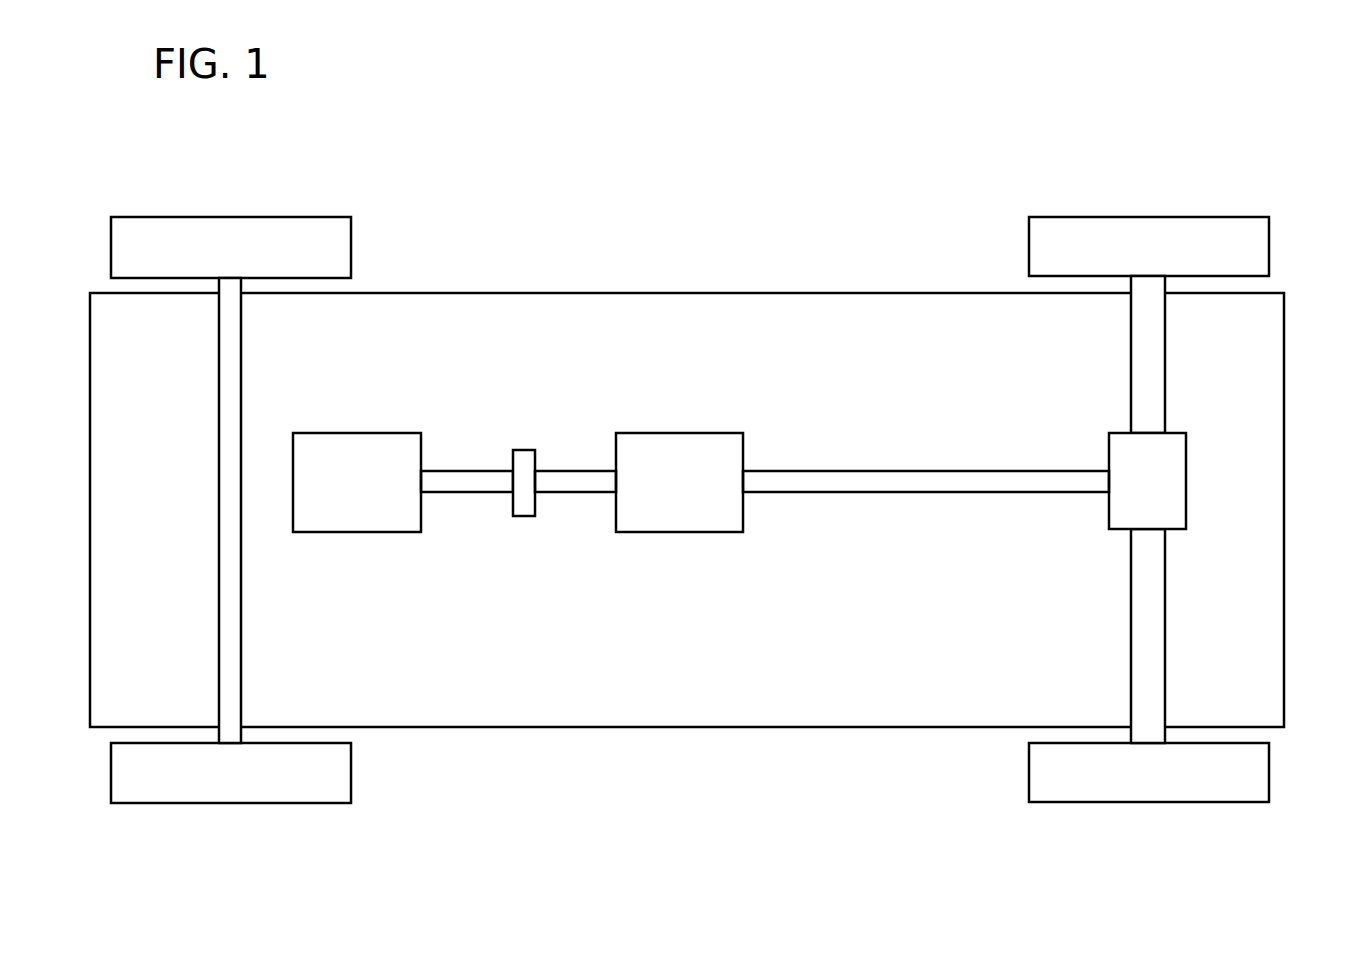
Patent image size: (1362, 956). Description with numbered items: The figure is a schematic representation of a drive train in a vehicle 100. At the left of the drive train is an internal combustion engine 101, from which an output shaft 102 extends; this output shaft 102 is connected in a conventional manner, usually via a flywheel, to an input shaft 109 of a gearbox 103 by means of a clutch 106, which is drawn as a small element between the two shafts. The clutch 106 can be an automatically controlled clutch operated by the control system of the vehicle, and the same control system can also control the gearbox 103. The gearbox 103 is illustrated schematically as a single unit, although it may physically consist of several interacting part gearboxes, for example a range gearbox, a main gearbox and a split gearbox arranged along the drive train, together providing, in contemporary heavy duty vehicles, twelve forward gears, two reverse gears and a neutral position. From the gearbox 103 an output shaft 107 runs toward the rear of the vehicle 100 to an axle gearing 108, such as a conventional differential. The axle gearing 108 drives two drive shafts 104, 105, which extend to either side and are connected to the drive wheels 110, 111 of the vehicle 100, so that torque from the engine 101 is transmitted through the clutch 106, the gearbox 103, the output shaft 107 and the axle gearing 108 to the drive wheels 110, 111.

The vehicle 100 is at (583, 118).
The internal combustion engine 101 is at (329, 520).
The output shaft 102 is at (448, 478).
The gearbox 103 is at (682, 445).
The drive shaft 104 is at (1153, 350).
The drive shaft 105 is at (1158, 643).
The clutch 106 is at (518, 505).
The output shaft 107 is at (1025, 487).
The axle gearing 108 is at (1182, 475).
The input shaft 109 is at (563, 480).
The drive wheel 110 is at (1262, 774).
The drive wheel 111 is at (1262, 237).